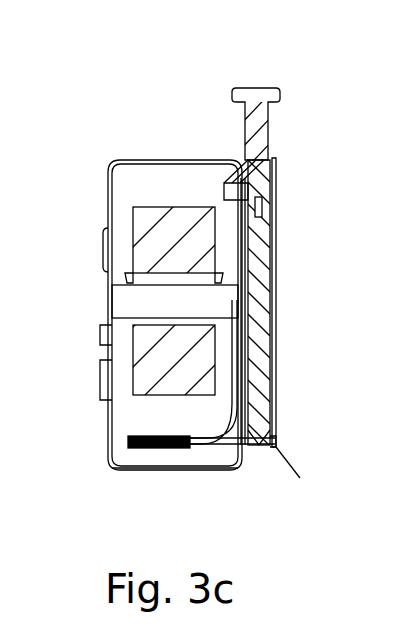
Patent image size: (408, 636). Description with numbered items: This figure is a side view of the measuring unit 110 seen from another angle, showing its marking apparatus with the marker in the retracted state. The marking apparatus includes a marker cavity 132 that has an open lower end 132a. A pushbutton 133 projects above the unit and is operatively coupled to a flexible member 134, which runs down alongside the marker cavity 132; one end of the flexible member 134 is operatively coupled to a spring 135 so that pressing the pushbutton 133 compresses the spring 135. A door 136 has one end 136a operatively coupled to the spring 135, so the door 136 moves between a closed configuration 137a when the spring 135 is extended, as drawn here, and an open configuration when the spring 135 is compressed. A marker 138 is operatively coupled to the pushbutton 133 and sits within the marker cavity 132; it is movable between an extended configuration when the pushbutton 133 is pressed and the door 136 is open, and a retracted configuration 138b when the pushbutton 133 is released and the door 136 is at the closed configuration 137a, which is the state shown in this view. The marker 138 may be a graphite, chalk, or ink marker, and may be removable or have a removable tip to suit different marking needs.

The measuring unit 110 is at (88, 97).
The marker cavity 132 is at (262, 289).
The open lower end 132a is at (277, 437).
The pushbutton 133 is at (259, 90).
The flexible member 134 is at (238, 268).
The spring 135 is at (195, 438).
The door 136 is at (258, 441).
The one end of the door 136a is at (197, 468).
The closed configuration 137a is at (283, 488).
The marker 138 is at (261, 354).
The retracted configuration 138b is at (256, 409).